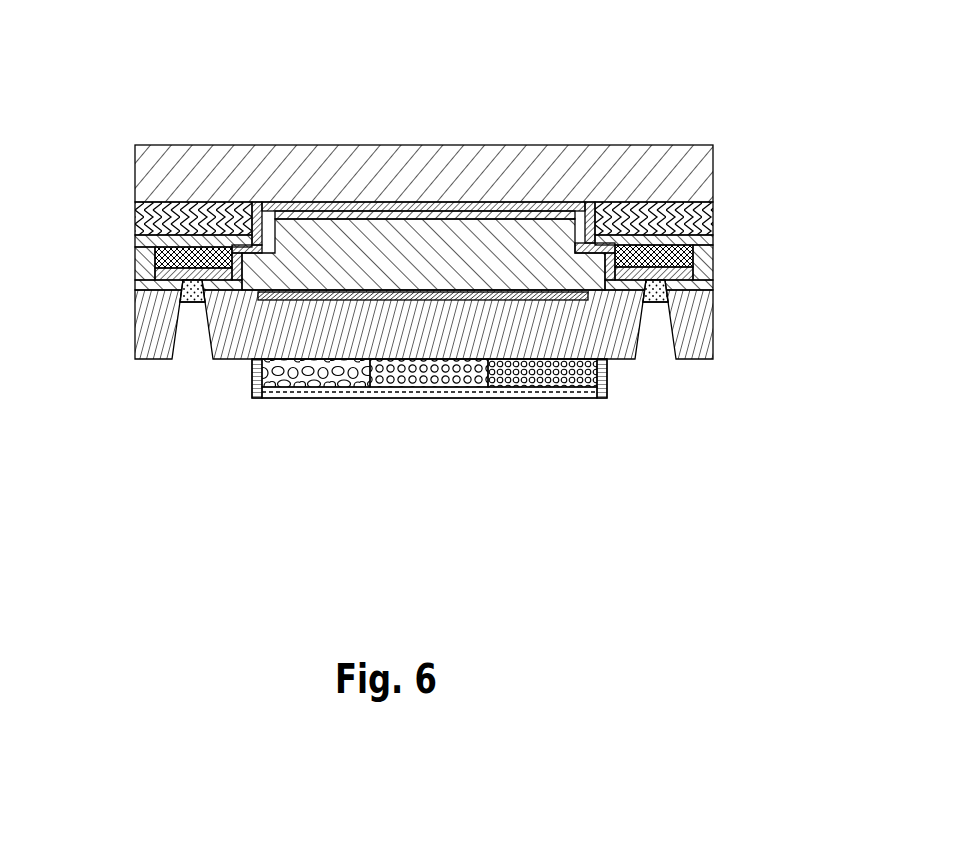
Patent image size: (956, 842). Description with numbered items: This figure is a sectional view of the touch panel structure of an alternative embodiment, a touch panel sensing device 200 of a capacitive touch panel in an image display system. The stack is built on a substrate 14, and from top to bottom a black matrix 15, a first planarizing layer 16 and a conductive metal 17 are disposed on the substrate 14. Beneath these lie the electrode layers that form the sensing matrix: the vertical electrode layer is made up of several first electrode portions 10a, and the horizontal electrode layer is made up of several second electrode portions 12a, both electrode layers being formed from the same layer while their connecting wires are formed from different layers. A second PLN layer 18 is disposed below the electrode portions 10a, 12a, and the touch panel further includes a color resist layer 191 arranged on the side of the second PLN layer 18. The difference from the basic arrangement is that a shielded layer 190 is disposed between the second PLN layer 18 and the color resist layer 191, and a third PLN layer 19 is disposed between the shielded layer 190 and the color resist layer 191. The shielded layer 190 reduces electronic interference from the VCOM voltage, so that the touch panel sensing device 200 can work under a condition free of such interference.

The touch panel sensing device 200 is at (431, 244).
The substrate 14 is at (652, 162).
The black matrix 15 is at (713, 208).
The first planarizing layer 16 is at (713, 240).
The conductive metal 17 is at (153, 252).
The first electrode portion 10a is at (713, 270).
The second electrode portion 12a is at (153, 282).
The second PLN layer 18 is at (602, 288).
The third PLN layer 19 is at (272, 301).
The shielded layer 190 is at (260, 296).
The color resist layer 191 is at (550, 372).